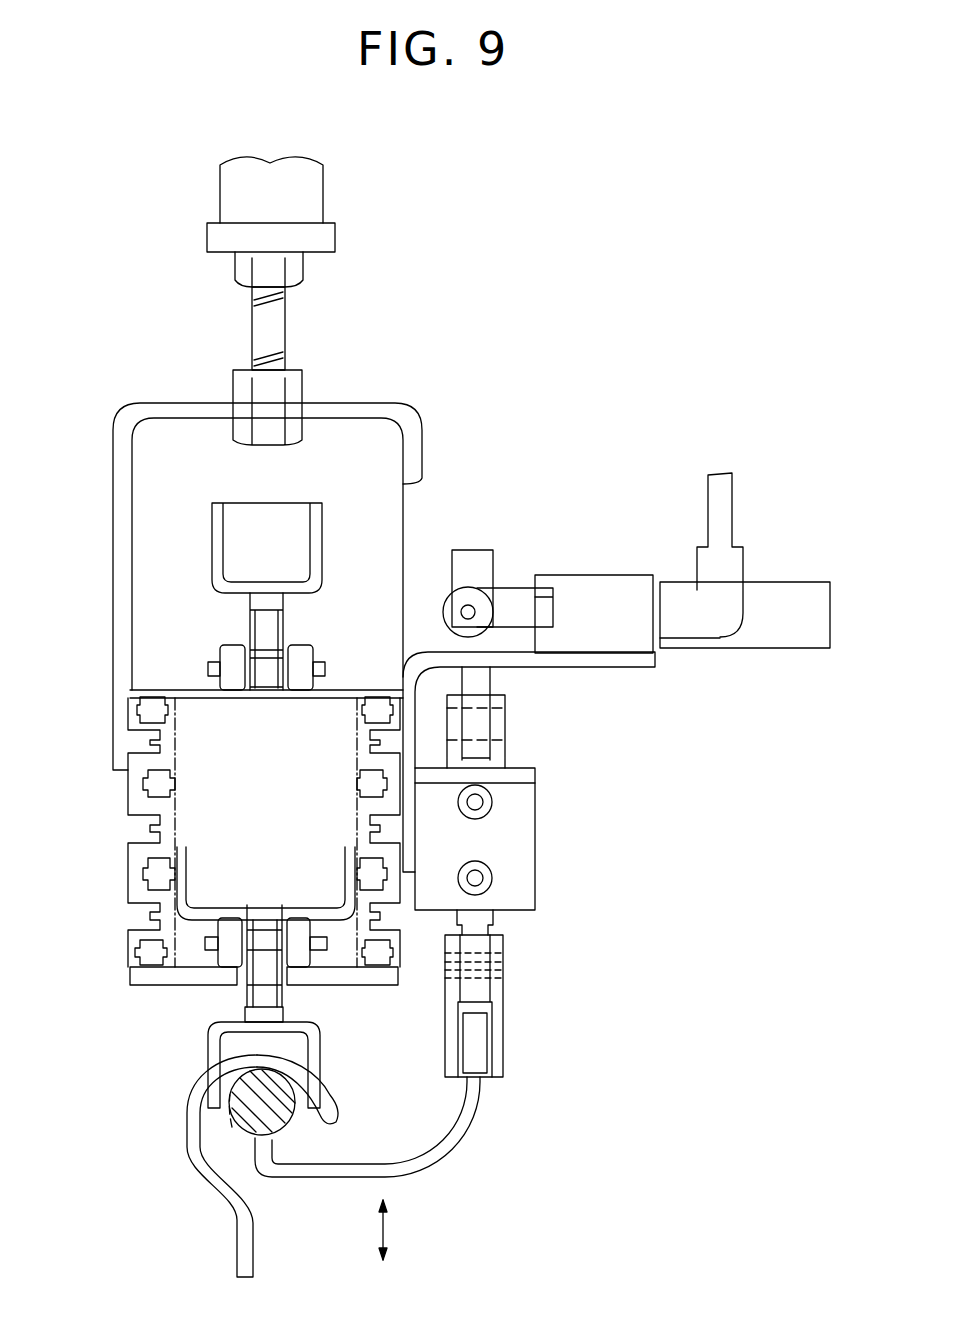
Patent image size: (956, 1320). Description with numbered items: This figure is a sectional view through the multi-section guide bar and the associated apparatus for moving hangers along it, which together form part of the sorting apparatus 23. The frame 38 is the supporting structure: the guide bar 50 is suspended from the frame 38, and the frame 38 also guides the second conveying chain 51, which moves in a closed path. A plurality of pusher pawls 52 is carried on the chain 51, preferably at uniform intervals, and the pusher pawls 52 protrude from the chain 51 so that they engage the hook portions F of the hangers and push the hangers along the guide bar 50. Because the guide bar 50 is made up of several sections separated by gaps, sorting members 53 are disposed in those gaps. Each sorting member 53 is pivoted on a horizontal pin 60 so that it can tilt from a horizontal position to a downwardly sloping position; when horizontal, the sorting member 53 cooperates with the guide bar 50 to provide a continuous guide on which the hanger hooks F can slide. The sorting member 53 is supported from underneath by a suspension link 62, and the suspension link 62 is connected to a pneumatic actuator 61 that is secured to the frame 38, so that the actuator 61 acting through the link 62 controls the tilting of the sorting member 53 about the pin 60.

The sorting apparatus 23 is at (183, 1062).
The frame 38 is at (130, 895).
The guide bar 50 is at (335, 1110).
The sorting member 53 is at (297, 1127).
The second conveying chain 51 is at (322, 652).
The pusher pawl 52 is at (322, 557).
The horizontal pin 60 is at (232, 1127).
The pneumatic actuator 61 is at (538, 860).
The suspension link 62 is at (473, 1135).
The hook portion F is at (177, 1127).